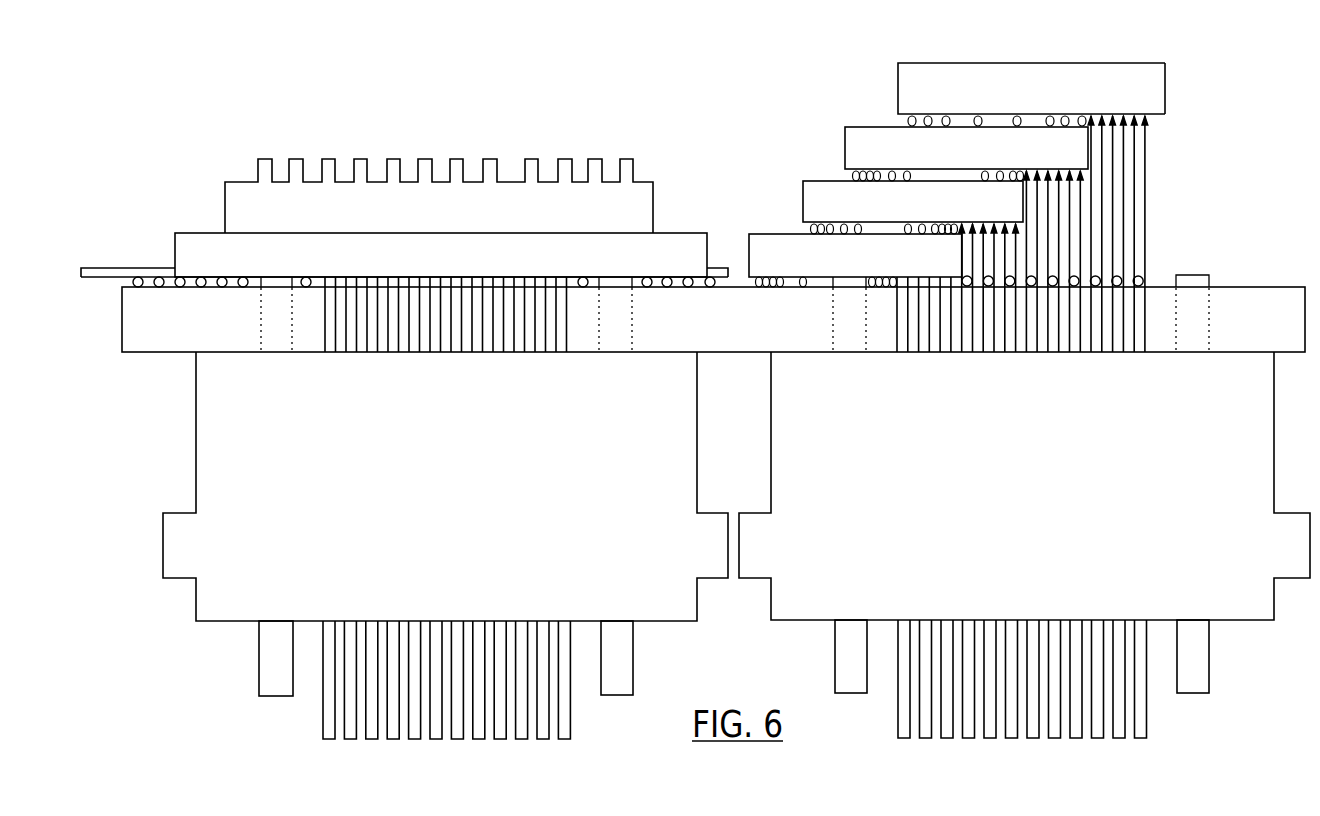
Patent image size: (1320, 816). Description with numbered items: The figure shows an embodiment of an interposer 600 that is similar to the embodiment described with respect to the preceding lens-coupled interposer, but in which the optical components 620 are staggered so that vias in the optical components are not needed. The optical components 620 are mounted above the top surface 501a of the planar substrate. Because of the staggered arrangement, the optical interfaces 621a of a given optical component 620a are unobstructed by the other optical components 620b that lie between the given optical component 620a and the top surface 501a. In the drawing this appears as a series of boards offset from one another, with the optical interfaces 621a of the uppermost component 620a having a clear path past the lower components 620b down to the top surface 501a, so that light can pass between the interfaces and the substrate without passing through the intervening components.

The interposer 600 is at (1205, 190).
The optical components 620 is at (937, 77).
The given optical component 620a is at (1155, 90).
The optical components 620b is at (1080, 156).
The optical interfaces 621a is at (1147, 118).
The top surface 501a is at (1258, 286).